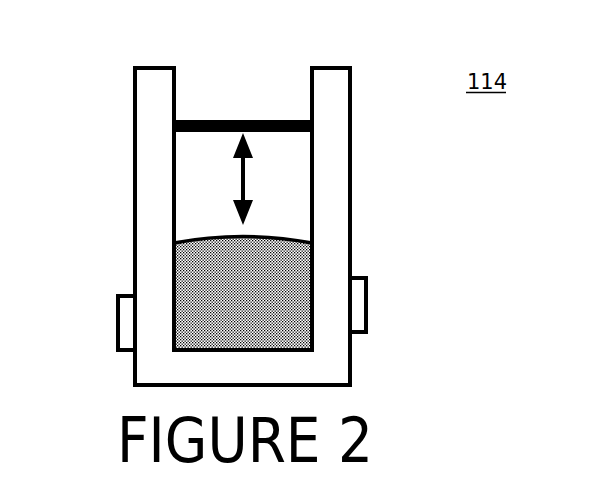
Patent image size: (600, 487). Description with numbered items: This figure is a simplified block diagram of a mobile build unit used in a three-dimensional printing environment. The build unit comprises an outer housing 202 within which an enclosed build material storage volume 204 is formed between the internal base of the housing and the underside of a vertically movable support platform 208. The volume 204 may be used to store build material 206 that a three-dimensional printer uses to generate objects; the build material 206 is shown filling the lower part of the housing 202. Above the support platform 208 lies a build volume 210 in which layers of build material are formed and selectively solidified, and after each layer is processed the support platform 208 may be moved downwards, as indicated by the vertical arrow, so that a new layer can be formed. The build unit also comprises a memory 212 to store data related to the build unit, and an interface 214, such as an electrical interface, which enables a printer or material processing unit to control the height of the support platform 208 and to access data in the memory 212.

The outer housing 202 is at (333, 225).
The build material storage volume 204 is at (198, 183).
The build material 206 is at (190, 278).
The vertically movable support platform 208 is at (268, 120).
The build volume 210 is at (235, 86).
The memory 212 is at (357, 302).
The interface 214 is at (118, 338).